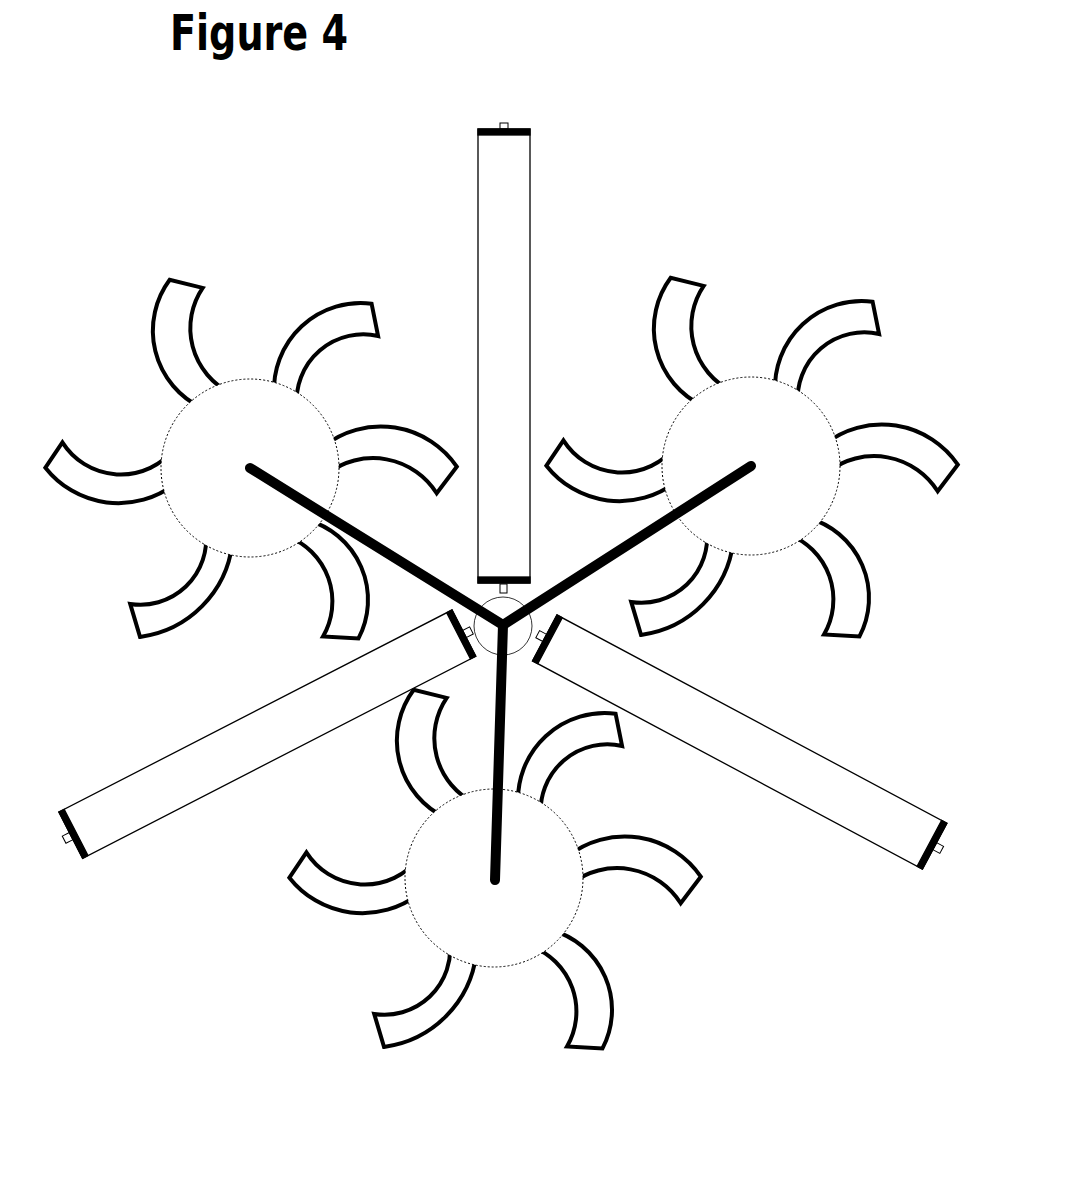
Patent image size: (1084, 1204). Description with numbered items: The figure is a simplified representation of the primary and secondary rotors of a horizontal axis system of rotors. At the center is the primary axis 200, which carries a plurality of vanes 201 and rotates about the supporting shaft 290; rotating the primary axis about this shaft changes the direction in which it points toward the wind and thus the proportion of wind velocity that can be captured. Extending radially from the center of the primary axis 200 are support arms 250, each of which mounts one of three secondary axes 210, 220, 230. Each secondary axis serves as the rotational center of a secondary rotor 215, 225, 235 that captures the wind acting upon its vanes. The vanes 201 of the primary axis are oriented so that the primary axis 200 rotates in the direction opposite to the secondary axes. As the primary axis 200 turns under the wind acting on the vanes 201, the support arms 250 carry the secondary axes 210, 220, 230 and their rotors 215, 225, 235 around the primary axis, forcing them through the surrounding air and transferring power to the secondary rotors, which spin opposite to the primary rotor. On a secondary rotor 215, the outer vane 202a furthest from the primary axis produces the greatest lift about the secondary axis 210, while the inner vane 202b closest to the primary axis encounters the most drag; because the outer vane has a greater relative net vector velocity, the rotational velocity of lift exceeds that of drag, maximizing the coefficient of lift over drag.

The primary axis 200 is at (501, 562).
The vanes 201 is at (530, 138).
The outer vane 202a is at (65, 442).
The inner vane 202b is at (422, 450).
The secondary axis 210 is at (250, 423).
The secondary rotor 215 is at (208, 513).
The secondary axis 220 is at (497, 878).
The secondary rotor 225 is at (437, 853).
The secondary axis 230 is at (742, 462).
The secondary rotor 235 is at (750, 413).
The support arms 250 is at (387, 562).
The supporting shaft 290 is at (525, 640).